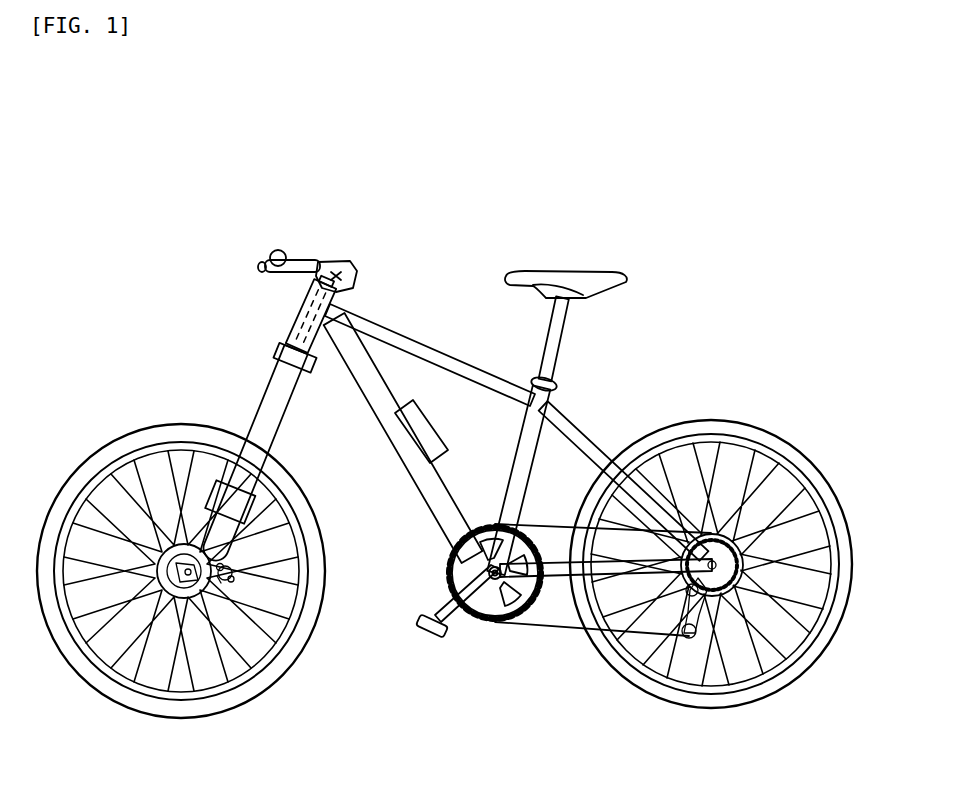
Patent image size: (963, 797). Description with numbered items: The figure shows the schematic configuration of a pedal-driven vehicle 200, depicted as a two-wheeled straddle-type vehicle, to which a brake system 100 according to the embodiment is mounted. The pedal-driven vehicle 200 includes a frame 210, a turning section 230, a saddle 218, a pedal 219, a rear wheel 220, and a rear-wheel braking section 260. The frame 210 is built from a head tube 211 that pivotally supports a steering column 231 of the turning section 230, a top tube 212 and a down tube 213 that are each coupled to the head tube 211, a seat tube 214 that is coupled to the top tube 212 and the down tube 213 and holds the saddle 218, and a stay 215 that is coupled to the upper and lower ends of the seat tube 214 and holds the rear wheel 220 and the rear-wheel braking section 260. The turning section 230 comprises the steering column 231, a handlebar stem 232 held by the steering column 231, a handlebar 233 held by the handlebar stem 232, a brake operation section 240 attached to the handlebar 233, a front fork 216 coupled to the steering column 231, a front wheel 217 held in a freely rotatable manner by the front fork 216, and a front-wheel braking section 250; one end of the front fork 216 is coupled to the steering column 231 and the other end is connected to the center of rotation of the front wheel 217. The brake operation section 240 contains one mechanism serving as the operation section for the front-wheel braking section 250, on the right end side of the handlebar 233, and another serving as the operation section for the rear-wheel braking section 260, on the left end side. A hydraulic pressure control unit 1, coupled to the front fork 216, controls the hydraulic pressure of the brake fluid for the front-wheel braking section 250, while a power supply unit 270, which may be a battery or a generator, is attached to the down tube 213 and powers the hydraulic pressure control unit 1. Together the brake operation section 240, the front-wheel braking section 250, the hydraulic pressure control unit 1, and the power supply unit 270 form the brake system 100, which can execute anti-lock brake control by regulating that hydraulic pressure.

The hydraulic pressure control unit 1 is at (241, 503).
The brake system 100 is at (384, 228).
The pedal-driven vehicle 200 is at (562, 141).
The frame 210 is at (411, 304).
The head tube 211 is at (316, 357).
The top tube 212 is at (455, 367).
The down tube 213 is at (433, 488).
The seat tube 214 is at (514, 492).
The stay 215 is at (585, 433).
The front fork 216 is at (258, 432).
The front wheel 217 is at (104, 459).
The saddle 218 is at (591, 281).
The pedal 219 is at (435, 634).
The rear wheel 220 is at (783, 451).
The turning section 230 is at (188, 312).
The steering column 231 is at (292, 330).
The handlebar stem 232 is at (330, 259).
The handlebar 233 is at (283, 250).
The brake operation section 240 is at (261, 266).
The front-wheel braking section 250 is at (231, 577).
The rear-wheel braking section 260 is at (726, 535).
The power supply unit 270 is at (438, 430).